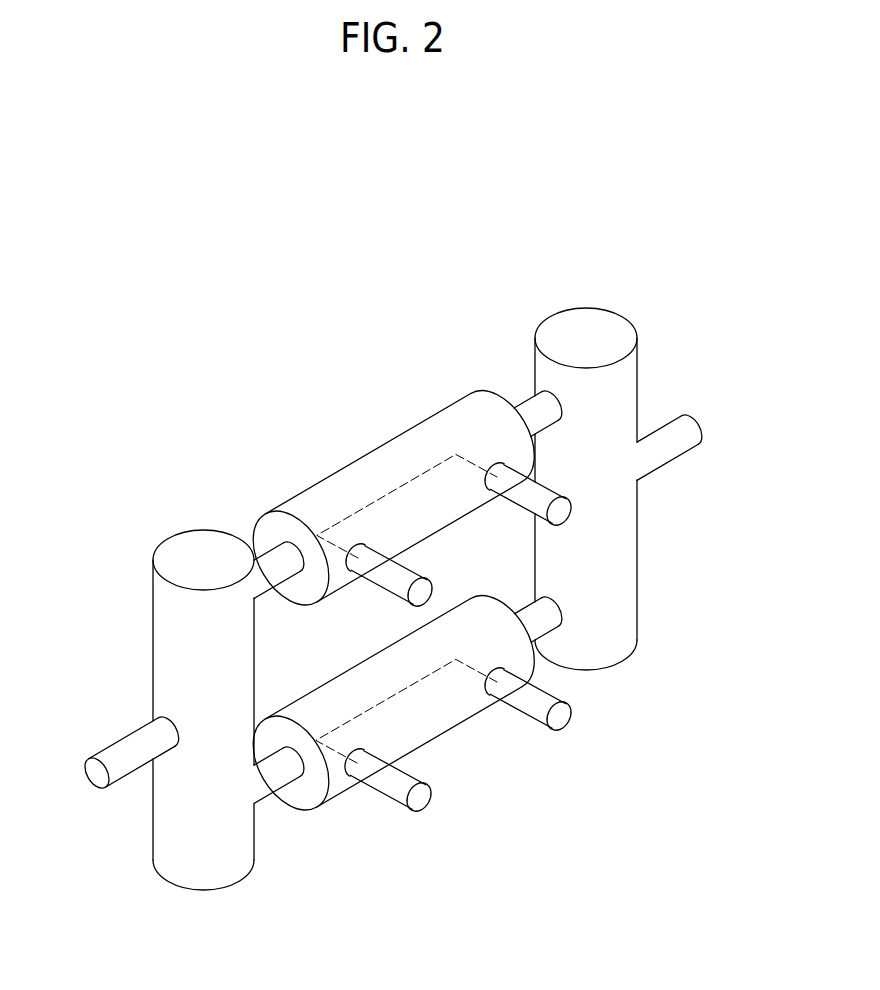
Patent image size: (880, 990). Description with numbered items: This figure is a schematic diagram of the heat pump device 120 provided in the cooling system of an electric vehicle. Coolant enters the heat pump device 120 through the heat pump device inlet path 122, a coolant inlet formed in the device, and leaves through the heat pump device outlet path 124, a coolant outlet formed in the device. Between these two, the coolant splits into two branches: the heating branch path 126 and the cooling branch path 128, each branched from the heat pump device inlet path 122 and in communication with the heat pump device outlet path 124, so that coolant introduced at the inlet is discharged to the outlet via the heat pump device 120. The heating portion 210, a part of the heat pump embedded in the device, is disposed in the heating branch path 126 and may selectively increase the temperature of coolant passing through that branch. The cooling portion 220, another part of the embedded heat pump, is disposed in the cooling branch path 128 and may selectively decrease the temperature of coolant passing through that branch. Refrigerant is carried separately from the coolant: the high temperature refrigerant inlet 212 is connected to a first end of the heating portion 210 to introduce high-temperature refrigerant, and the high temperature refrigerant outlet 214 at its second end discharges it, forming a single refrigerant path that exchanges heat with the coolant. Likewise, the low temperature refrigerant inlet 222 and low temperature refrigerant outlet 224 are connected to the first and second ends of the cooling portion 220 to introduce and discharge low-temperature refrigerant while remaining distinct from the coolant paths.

The heat pump device 120 is at (655, 272).
The heat pump device inlet path 122 is at (125, 747).
The heat pump device outlet path 124 is at (668, 448).
The heating branch path 126 is at (277, 557).
The cooling branch path 128 is at (283, 770).
The heating portion 210 is at (418, 437).
The high temperature refrigerant inlet 212 is at (402, 577).
The high temperature refrigerant outlet 214 is at (473, 393).
The cooling portion 220 is at (432, 713).
The low temperature refrigerant inlet 222 is at (535, 710).
The low temperature refrigerant outlet 224 is at (391, 801).